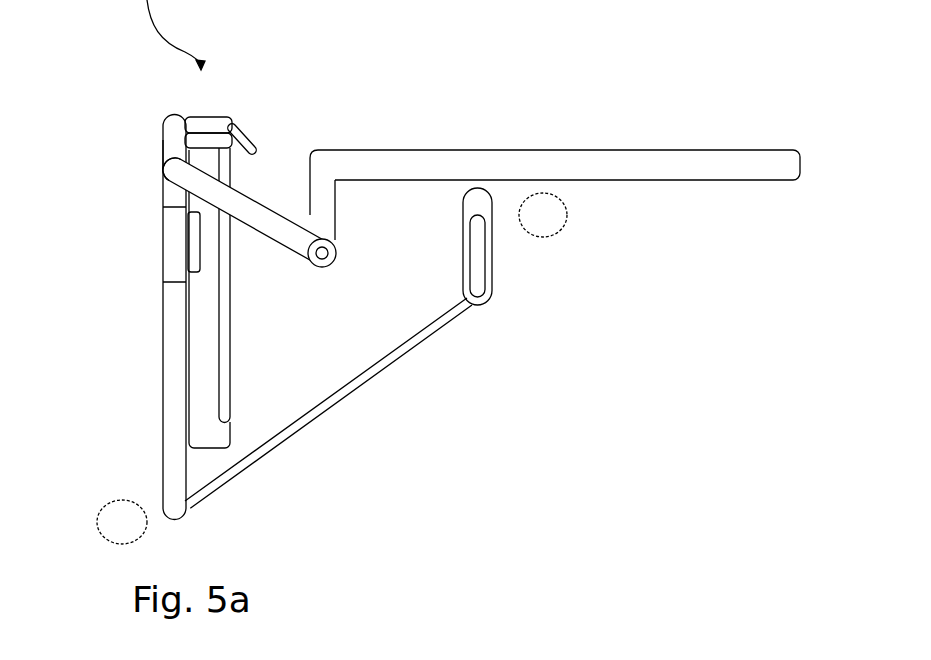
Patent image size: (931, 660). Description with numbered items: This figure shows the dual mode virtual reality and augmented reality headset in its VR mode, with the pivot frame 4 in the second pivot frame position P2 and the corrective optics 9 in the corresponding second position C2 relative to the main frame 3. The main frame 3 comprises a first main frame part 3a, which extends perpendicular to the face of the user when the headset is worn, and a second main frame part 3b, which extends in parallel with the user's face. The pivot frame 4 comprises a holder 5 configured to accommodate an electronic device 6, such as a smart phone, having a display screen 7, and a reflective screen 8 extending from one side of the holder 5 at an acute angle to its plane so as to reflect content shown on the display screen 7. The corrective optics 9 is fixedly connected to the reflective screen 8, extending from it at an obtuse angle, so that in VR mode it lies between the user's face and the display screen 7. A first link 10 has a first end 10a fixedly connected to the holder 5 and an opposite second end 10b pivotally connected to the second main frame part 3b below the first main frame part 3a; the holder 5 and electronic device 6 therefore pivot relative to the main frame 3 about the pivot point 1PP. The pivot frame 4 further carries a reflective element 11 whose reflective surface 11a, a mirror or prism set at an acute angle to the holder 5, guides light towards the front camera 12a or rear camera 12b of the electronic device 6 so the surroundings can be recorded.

The main frame 3 is at (569, 131).
The first main frame part 3a is at (700, 165).
The second main frame part 3b is at (323, 186).
The pivot frame 4 is at (151, 283).
The holder 5 is at (178, 471).
The electronic device 6 is at (200, 412).
The display screen 7 is at (226, 407).
The reflective screen 8 is at (418, 345).
The corrective optics 9 is at (476, 247).
The first link 10 is at (247, 213).
The first end of the first link 10a is at (184, 175).
The second end of the first link 10b is at (304, 238).
The reflective element 11 is at (227, 114).
The reflective surface 11a is at (240, 138).
The front camera 12a is at (182, 143).
The rear camera 12b is at (160, 153).
The pivot point 1PP is at (326, 255).
The second position C2 is at (543, 215).
The second pivot frame position P2 is at (122, 522).